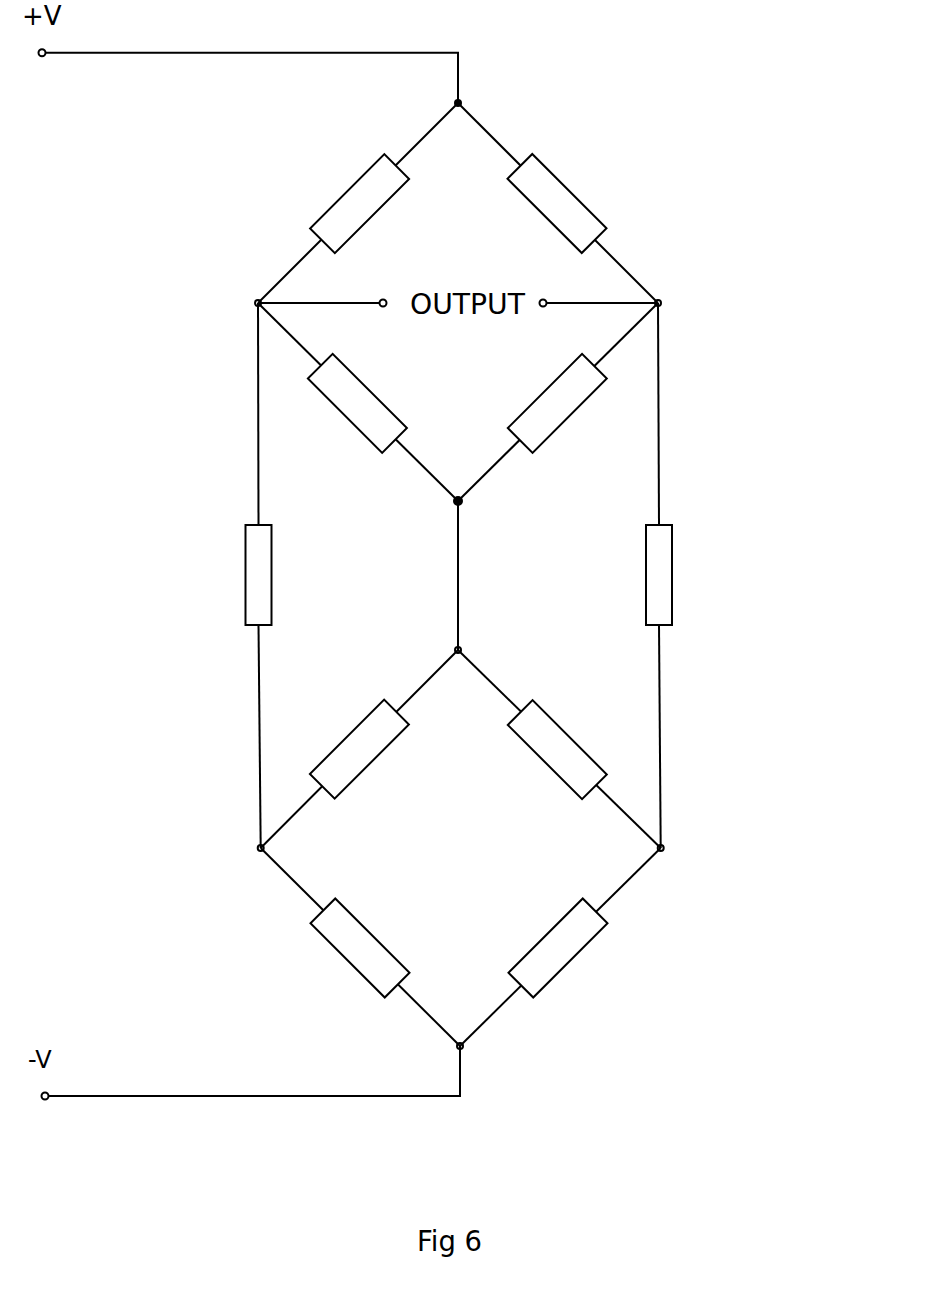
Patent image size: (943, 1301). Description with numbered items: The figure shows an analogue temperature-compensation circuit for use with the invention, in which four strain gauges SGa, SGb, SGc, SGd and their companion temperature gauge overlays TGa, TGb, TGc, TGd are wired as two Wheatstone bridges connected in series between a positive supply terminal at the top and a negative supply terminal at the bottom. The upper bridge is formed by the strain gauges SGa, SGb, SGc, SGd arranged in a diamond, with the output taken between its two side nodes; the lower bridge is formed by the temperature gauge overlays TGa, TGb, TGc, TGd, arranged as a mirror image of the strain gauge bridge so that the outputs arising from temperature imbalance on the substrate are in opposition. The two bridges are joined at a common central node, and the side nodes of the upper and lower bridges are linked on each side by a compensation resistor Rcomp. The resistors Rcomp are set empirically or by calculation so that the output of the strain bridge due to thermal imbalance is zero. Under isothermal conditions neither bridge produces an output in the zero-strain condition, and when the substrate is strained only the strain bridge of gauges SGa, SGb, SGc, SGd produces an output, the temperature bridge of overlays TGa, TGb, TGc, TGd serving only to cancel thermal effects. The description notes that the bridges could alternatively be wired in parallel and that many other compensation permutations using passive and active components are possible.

The strain gauge SGa is at (346, 203).
The strain gauge SGb is at (568, 203).
The strain gauge SGc is at (574, 403).
The strain gauge SGd is at (345, 403).
The temperature gauge overlay TGa is at (350, 948).
The temperature gauge overlay TGb is at (572, 948).
The temperature gauge overlay TGc is at (568, 749).
The temperature gauge overlay TGd is at (352, 749).
The compensation resistor Rcomp is at (453, 575).